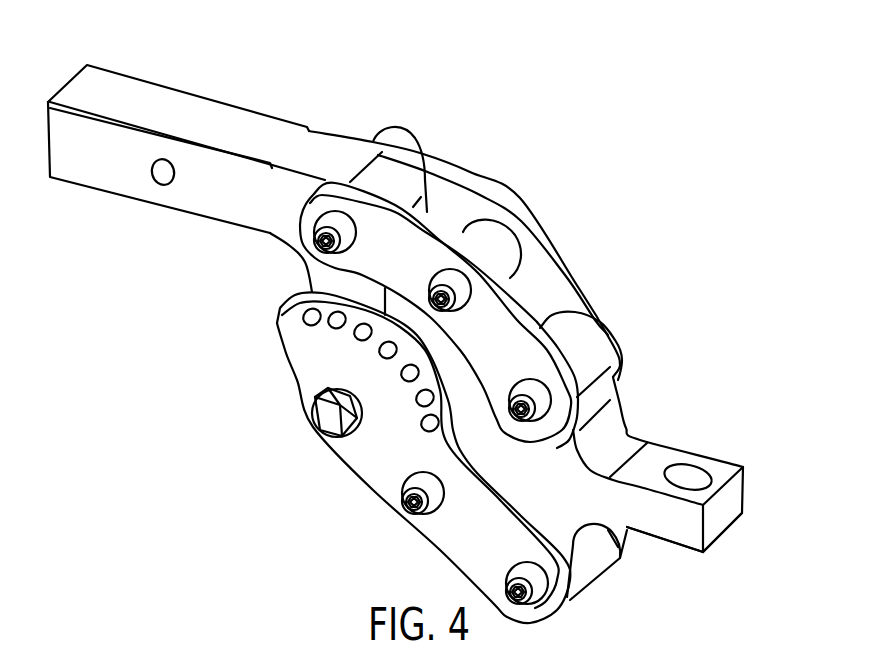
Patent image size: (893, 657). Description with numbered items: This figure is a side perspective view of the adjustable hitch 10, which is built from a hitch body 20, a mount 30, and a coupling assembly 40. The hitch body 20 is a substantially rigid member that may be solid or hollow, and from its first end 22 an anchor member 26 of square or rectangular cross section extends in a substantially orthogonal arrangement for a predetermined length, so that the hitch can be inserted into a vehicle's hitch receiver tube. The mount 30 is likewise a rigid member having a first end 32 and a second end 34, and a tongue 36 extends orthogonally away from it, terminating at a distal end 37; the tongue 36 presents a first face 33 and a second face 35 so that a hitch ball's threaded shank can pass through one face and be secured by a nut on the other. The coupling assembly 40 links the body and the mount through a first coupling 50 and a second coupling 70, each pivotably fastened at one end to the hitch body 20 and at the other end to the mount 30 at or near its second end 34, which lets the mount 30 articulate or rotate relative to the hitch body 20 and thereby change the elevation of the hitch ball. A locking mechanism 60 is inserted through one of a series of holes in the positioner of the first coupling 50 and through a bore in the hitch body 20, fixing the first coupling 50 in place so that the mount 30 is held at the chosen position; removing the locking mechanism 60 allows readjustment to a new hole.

The adjustable hitch 10 is at (692, 188).
The hitch body 20 is at (270, 270).
The first end 22 is at (398, 172).
The anchor member 26 is at (170, 103).
The mount 30 is at (700, 397).
The first end 32 is at (583, 337).
The first face 33 is at (728, 472).
The second end 34 is at (583, 552).
The second face 35 is at (657, 540).
The tongue 36 is at (662, 463).
The distal end 37 is at (720, 513).
The coupling assembly 40 is at (579, 211).
The first coupling 50 is at (442, 547).
The locking mechanism 60 is at (333, 323).
The second coupling 70 is at (474, 194).